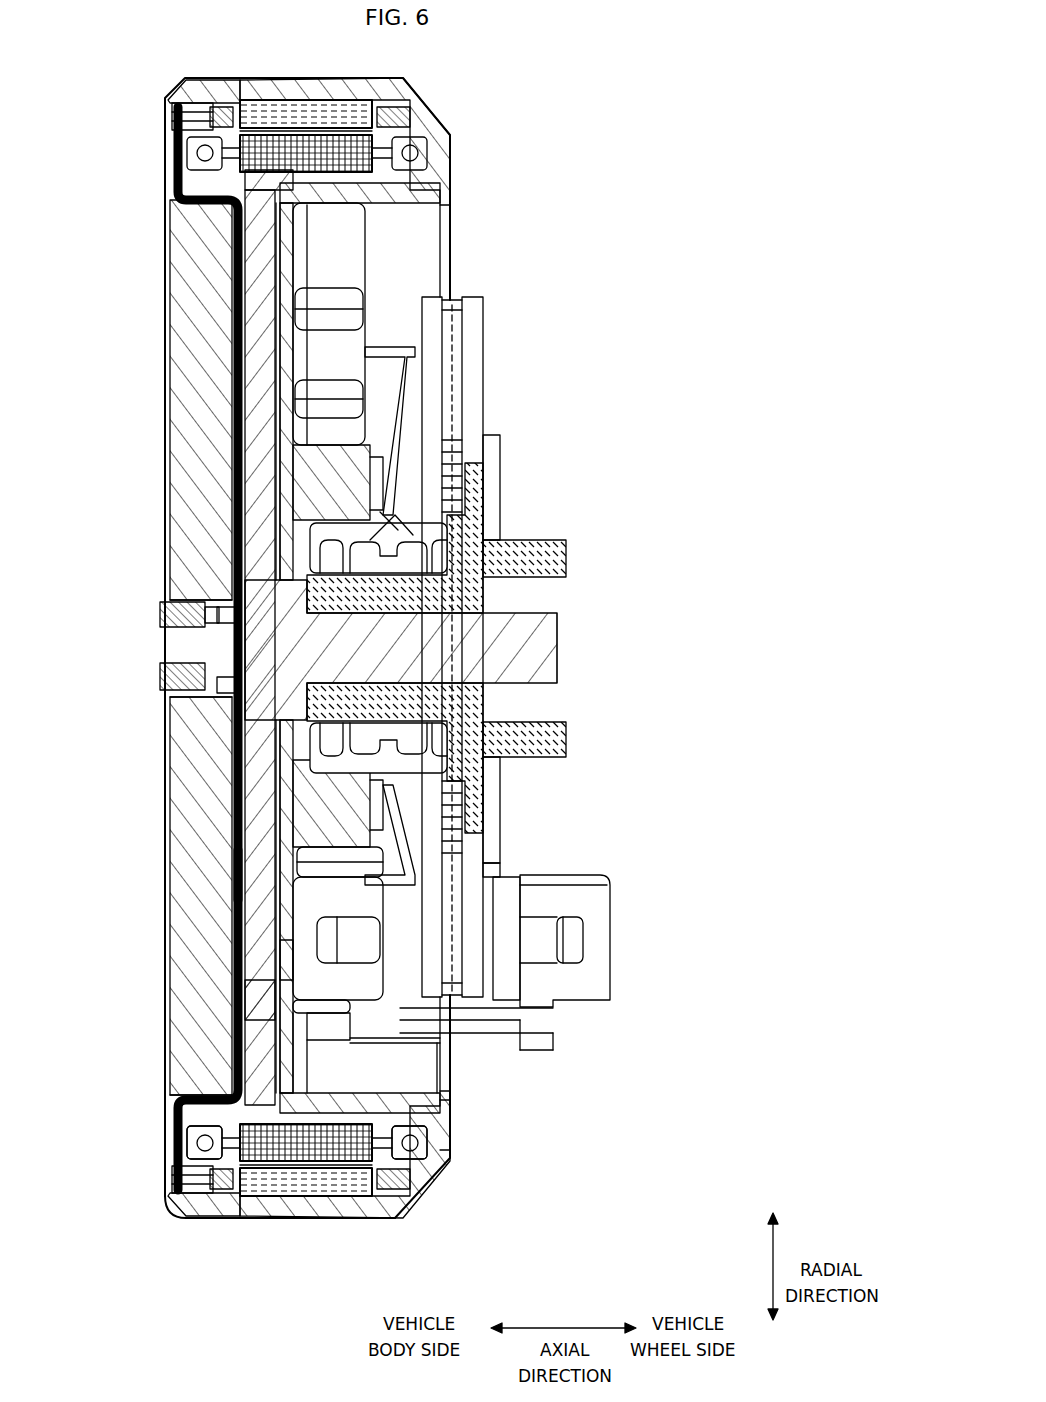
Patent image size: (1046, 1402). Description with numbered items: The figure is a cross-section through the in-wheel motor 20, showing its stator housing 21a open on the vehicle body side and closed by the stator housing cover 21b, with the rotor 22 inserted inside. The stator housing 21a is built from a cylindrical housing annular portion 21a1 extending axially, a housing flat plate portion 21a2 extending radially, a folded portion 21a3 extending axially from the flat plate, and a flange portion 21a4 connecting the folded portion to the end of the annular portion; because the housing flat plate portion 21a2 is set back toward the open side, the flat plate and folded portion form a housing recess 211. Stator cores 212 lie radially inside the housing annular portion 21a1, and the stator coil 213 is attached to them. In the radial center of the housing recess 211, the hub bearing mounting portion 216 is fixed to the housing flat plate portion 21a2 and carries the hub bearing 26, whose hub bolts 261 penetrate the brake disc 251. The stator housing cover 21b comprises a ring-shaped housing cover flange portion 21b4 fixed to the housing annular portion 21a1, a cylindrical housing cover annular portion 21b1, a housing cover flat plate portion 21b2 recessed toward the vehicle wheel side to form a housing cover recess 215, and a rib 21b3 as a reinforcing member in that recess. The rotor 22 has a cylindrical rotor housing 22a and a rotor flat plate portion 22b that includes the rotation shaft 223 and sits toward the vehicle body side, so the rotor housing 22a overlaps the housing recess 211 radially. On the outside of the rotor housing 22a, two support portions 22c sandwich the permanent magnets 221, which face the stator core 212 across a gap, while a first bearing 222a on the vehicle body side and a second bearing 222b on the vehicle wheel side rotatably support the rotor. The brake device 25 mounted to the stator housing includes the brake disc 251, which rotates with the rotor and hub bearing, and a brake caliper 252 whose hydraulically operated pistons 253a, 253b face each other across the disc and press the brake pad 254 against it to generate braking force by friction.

The in-wheel motor 20 is at (588, 183).
The stator housing 21a is at (446, 1189).
The housing annular portion 21a1 is at (318, 1218).
The housing flat plate portion 21a2 is at (295, 962).
The folded portion 21a3 is at (442, 1112).
The flange portion 21a4 is at (448, 1150).
The stator housing cover 21b is at (160, 738).
The housing cover annular portion 21b1 is at (183, 1093).
The housing cover flat plate portion 21b2 is at (215, 818).
The rib 21b3 is at (177, 772).
The housing cover flange portion 21b4 is at (165, 1172).
The rotor 22 is at (258, 1071).
The rotor housing 22a is at (263, 1150).
The rotor flat plate portion 22b is at (238, 877).
The support portion 22c is at (193, 1200).
The housing recess 211 is at (415, 1070).
The stator core 212 is at (283, 1193).
The stator coil 213 is at (385, 1192).
The housing cover recess 215 is at (265, 1003).
The hub bearing mounting portion 216 is at (398, 525).
The permanent magnet 221 is at (333, 1165).
The first bearing 222a is at (168, 1118).
The second bearing 222b is at (445, 1130).
The rotation shaft 223 is at (520, 646).
The brake device 25 is at (566, 673).
The brake disc 251 is at (470, 887).
The brake caliper 252 is at (612, 985).
The piston 253a is at (325, 948).
The piston 253b is at (565, 958).
The brake pad 254 is at (413, 903).
The hub bearing 26 is at (477, 521).
The hub bolt 261 is at (500, 558).